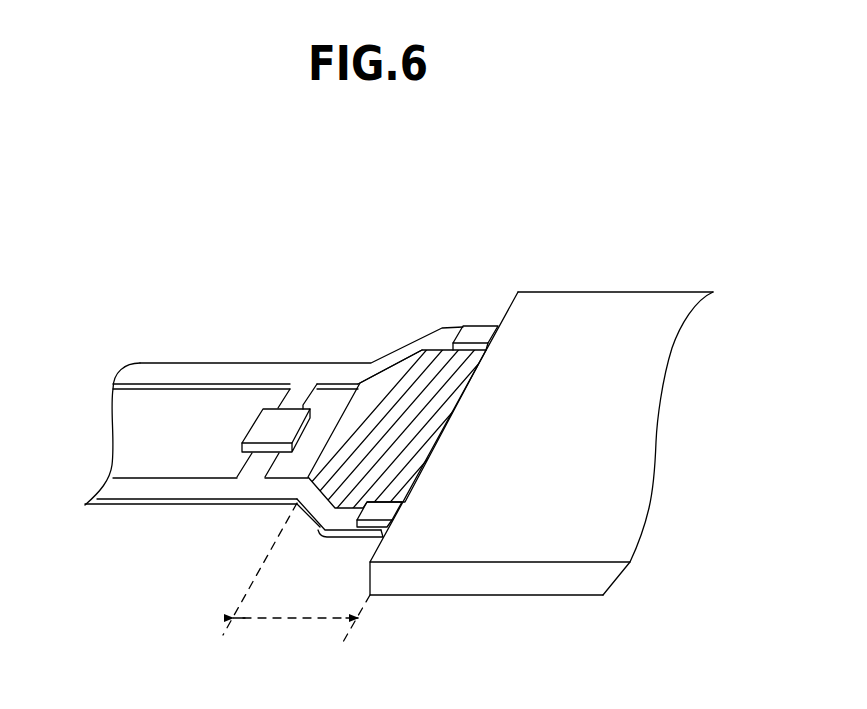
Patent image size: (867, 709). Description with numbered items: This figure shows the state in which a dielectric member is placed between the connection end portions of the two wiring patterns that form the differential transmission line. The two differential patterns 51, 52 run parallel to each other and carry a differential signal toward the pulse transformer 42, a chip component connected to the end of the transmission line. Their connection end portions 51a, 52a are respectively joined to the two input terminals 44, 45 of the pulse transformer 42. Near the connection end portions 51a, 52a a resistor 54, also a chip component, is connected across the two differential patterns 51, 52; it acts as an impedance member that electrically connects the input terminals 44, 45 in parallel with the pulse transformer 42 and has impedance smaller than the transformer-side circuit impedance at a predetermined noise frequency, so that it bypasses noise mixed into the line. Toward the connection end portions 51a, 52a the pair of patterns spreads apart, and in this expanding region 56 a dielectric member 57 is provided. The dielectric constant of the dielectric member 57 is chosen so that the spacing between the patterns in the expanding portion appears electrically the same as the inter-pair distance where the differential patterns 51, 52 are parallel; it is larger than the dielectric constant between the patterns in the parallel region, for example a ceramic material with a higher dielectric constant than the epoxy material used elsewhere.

The pulse transformer 42 is at (602, 306).
The input terminal 44 is at (486, 323).
The input terminal 45 is at (380, 508).
The differential pattern 51 is at (197, 377).
The connection end portion 51a is at (455, 336).
The differential pattern 52 is at (181, 490).
The connection end portion 52a is at (342, 525).
The resistor 54 is at (285, 418).
The region between patterns 56 is at (296, 576).
The dielectric member 57 is at (398, 413).